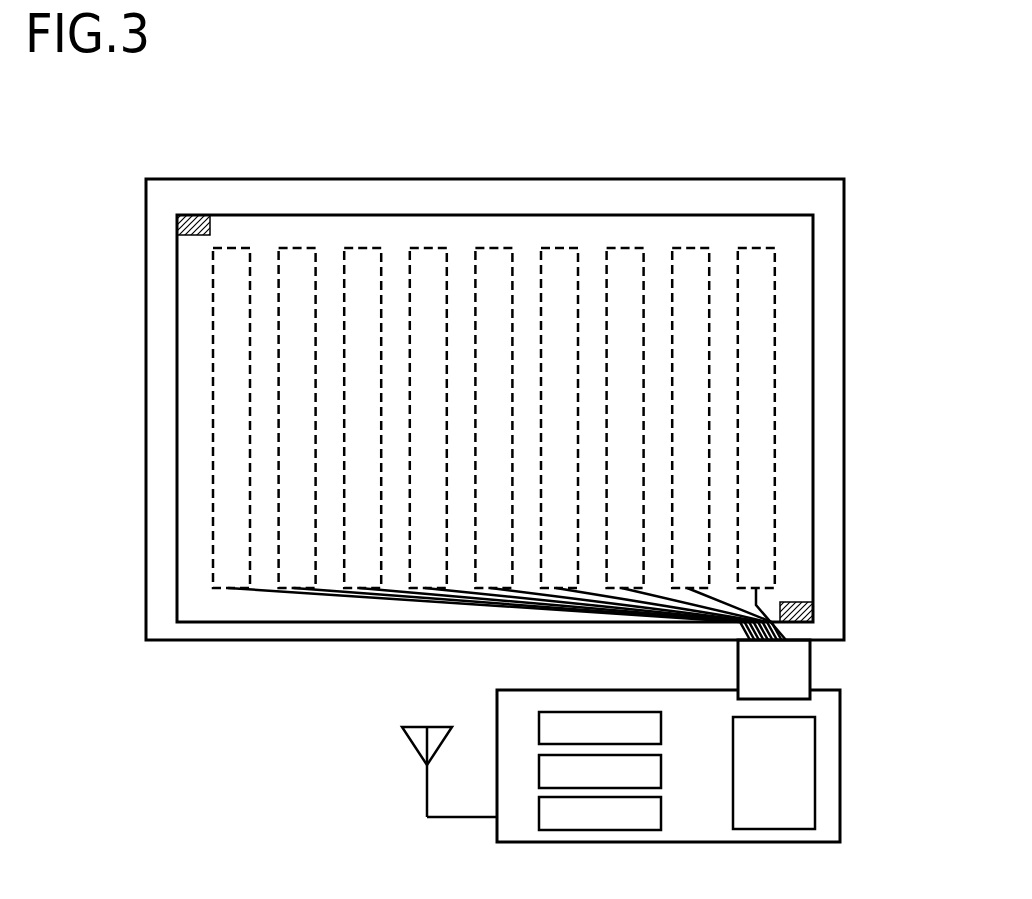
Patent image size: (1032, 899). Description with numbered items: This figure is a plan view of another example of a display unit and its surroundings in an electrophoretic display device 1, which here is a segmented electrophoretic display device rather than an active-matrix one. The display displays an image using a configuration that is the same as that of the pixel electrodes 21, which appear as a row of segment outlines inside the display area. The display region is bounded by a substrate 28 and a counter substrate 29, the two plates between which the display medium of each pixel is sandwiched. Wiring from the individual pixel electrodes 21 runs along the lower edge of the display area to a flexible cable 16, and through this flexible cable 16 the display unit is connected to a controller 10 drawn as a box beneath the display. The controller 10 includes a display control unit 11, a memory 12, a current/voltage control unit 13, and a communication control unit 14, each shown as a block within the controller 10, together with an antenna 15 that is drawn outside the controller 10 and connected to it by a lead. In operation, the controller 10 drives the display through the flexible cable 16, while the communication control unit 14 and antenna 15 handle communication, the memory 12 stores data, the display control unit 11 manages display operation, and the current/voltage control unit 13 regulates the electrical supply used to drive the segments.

The electrophoretic display device 1 is at (761, 129).
The controller 10 is at (842, 722).
The display control unit 11 is at (778, 822).
The memory 12 is at (593, 822).
The current/voltage control unit 13 is at (558, 770).
The communication control unit 14 is at (603, 727).
The antenna 15 is at (412, 749).
The flexible cable 16 is at (790, 673).
The pixel electrodes 21 is at (213, 503).
The substrate 28 is at (844, 460).
The counter substrate 29 is at (797, 214).